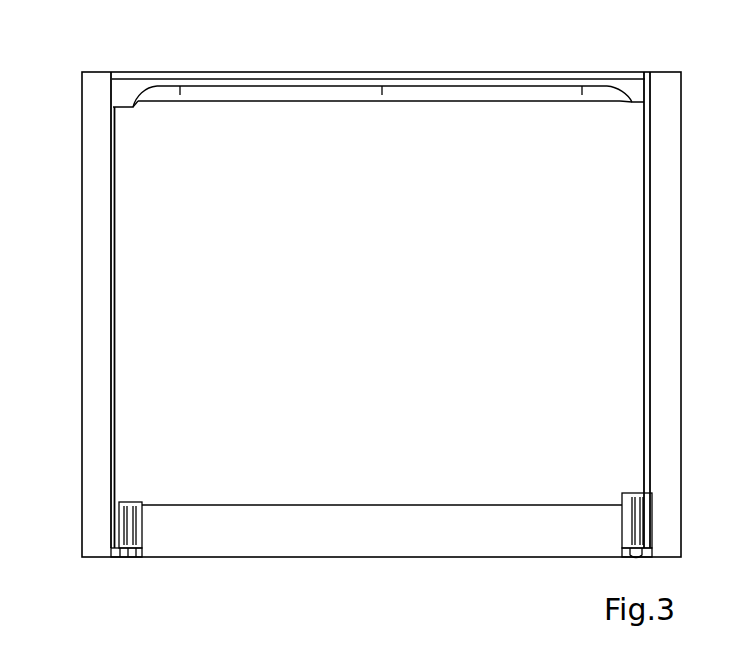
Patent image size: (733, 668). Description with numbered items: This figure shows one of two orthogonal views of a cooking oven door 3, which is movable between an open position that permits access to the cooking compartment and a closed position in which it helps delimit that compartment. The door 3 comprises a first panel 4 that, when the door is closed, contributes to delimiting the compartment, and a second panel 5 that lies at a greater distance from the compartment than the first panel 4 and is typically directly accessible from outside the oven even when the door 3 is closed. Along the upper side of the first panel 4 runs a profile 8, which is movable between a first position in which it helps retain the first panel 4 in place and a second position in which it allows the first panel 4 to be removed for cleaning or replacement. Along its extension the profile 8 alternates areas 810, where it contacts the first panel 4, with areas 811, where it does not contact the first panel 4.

The door 3 is at (178, 26).
The first panel 4 is at (342, 246).
The second panel 5 is at (80, 353).
The profile 8 is at (341, 66).
The areas where profile is in contact with first panel 810 is at (131, 110).
The areas where profile is not in contact with first panel 811 is at (403, 108).